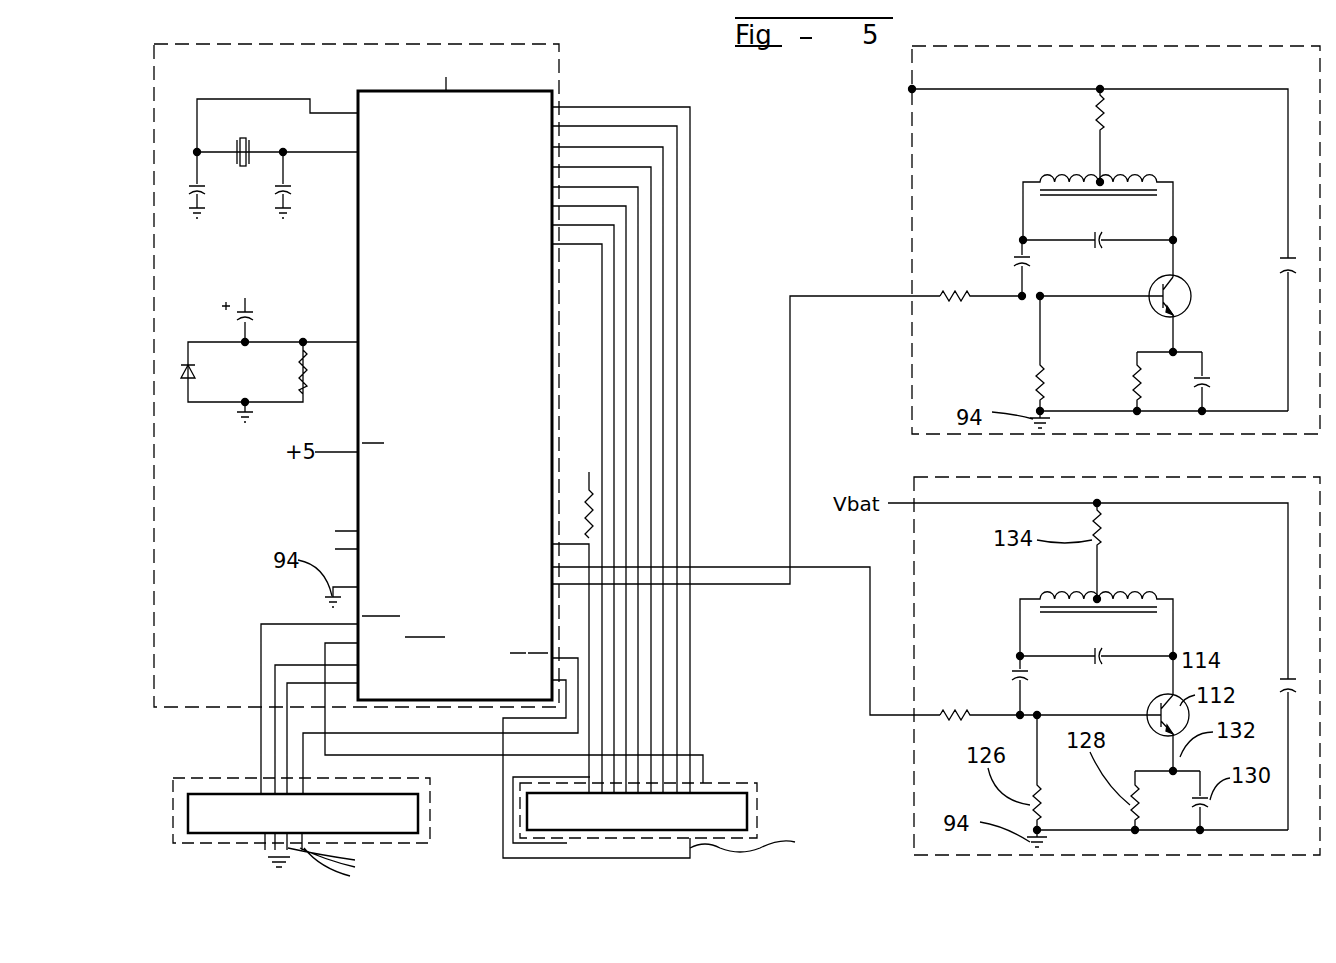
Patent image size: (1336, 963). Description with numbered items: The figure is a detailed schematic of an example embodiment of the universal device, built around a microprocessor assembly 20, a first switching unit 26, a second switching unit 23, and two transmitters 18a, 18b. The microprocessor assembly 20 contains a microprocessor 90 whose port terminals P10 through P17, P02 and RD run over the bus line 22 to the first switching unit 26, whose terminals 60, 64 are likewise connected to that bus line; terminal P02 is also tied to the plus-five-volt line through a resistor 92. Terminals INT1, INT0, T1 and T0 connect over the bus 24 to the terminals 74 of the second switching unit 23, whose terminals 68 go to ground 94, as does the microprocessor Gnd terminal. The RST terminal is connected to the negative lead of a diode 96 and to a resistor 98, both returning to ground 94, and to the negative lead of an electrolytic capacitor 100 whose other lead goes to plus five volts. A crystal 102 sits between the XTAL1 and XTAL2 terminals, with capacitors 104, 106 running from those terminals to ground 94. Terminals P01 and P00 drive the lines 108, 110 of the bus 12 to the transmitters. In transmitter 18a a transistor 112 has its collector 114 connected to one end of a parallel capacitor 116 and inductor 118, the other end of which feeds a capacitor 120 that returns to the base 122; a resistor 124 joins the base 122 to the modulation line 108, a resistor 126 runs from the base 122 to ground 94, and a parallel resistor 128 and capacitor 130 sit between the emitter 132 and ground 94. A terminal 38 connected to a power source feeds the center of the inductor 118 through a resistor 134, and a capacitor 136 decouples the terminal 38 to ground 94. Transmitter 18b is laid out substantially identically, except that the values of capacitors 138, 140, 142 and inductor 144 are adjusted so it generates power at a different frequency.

The bus 12 is at (750, 556).
The transmitter 18a is at (909, 186).
The transmitter 18b is at (913, 844).
The microprocessor assembly 20 is at (559, 63).
The bus line 22 is at (644, 98).
The second switch assembly 23 is at (173, 820).
The bus 24 is at (257, 740).
The first switching unit 26 is at (758, 814).
The terminal 38 is at (906, 90).
The terminal 60 is at (520, 850).
The terminal 64 is at (757, 839).
The terminals 68 is at (327, 858).
The terminals 74 is at (330, 682).
The 8051 microprocessor 90 is at (390, 90).
The resistor 92 is at (593, 498).
The ground 94 is at (252, 407).
The diode 96 is at (192, 378).
The resistor 98 is at (273, 372).
The electrolytic capacitor 100 is at (238, 322).
The crystal 102 is at (258, 138).
The capacitor 104 is at (207, 192).
The capacitor 106 is at (292, 192).
The modulation line 108 is at (788, 347).
The line 110 is at (868, 638).
The transistor 112 is at (1185, 285).
The collector 114 is at (1182, 262).
The capacitor 116 is at (1093, 236).
The inductor 118 is at (1135, 178).
The capacitor 120 is at (1010, 262).
The base 122 is at (1145, 300).
The resistor 124 is at (960, 302).
The resistor 126 is at (1035, 387).
The resistor 128 is at (1132, 383).
The capacitor 130 is at (1212, 380).
The emitter 132 is at (1180, 315).
The resistor 134 is at (1095, 112).
The capacitor 136 is at (1284, 255).
The capacitor 138 is at (1106, 652).
The capacitor 140 is at (1010, 680).
The capacitor 142 is at (1280, 688).
The inductor 144 is at (1133, 597).